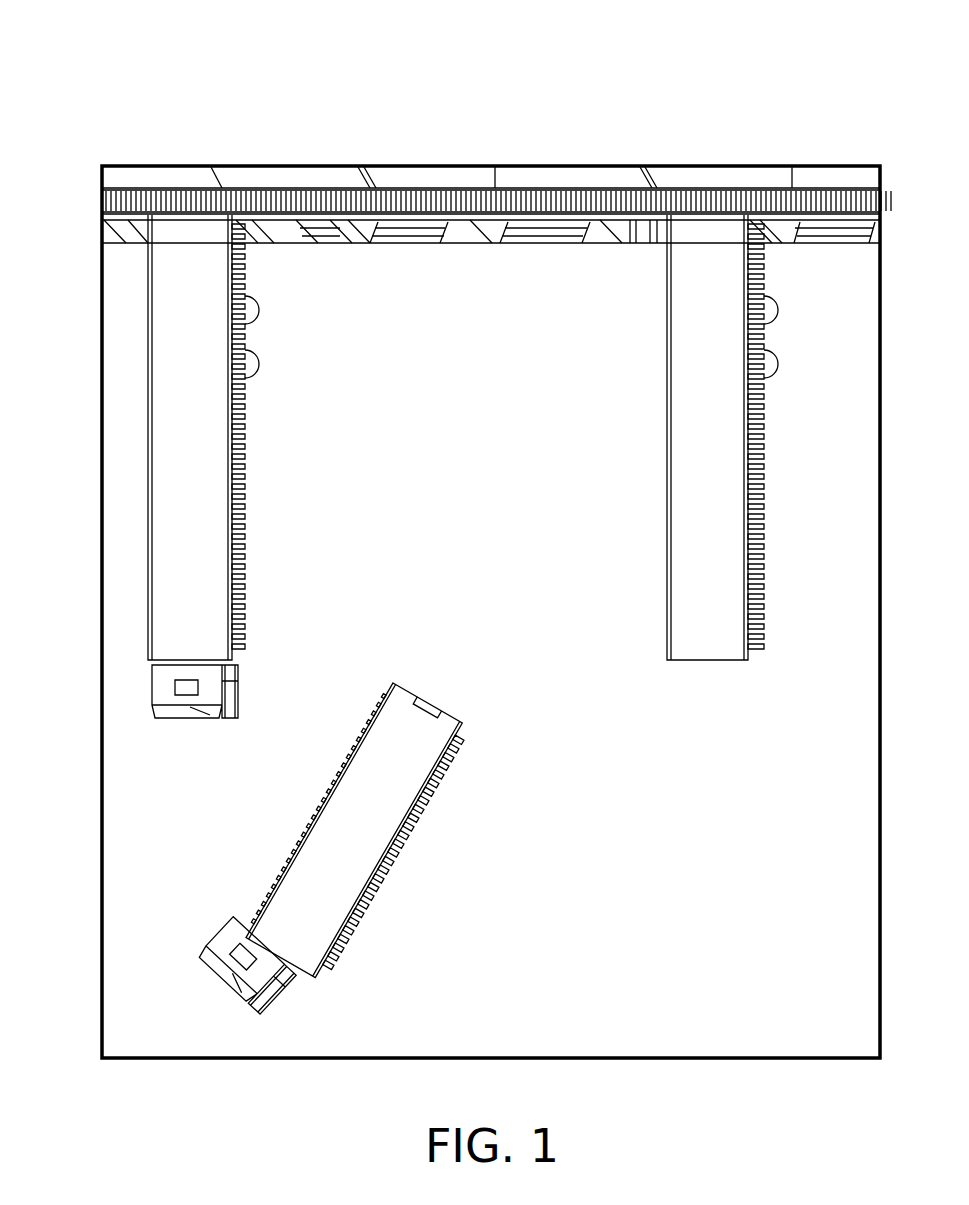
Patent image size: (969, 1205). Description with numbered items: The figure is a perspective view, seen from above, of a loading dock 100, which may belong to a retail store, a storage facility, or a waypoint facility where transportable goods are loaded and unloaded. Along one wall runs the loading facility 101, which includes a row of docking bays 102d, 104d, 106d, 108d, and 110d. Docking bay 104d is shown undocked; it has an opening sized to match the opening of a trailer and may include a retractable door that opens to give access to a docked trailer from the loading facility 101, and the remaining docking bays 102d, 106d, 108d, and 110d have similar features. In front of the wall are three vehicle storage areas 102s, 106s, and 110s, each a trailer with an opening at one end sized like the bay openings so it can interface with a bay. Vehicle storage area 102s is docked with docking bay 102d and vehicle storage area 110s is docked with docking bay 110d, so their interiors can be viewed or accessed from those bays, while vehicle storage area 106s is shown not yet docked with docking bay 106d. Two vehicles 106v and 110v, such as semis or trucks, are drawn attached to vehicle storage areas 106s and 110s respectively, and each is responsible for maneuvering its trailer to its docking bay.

The loading dock 100 is at (148, 46).
The loading facility 101 is at (823, 177).
The docking bay 102d is at (720, 177).
The docking bay 104d is at (583, 177).
The docking bay 106d is at (443, 177).
The docking bay 108d is at (288, 177).
The docking bay 110d is at (170, 177).
The vehicle storage area 102s is at (740, 449).
The vehicle storage area 106s is at (445, 717).
The vehicle storage area 110s is at (228, 540).
The vehicle 106v is at (226, 938).
The vehicle 110v is at (230, 688).